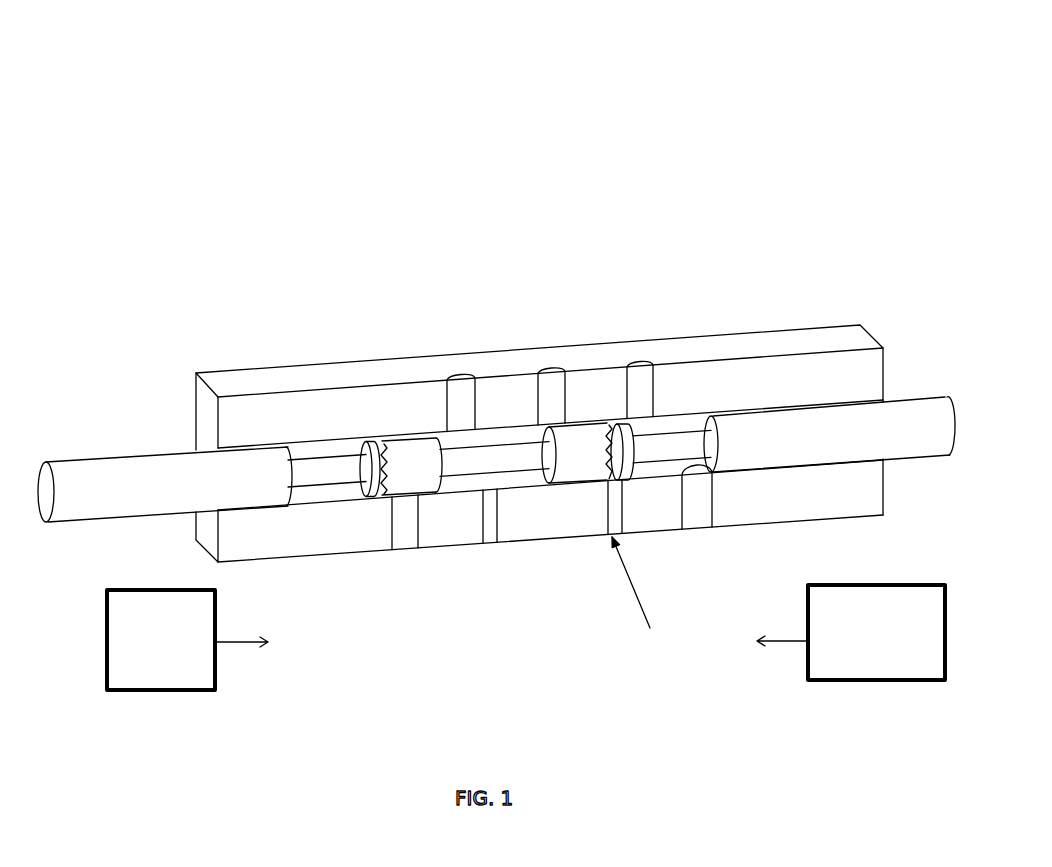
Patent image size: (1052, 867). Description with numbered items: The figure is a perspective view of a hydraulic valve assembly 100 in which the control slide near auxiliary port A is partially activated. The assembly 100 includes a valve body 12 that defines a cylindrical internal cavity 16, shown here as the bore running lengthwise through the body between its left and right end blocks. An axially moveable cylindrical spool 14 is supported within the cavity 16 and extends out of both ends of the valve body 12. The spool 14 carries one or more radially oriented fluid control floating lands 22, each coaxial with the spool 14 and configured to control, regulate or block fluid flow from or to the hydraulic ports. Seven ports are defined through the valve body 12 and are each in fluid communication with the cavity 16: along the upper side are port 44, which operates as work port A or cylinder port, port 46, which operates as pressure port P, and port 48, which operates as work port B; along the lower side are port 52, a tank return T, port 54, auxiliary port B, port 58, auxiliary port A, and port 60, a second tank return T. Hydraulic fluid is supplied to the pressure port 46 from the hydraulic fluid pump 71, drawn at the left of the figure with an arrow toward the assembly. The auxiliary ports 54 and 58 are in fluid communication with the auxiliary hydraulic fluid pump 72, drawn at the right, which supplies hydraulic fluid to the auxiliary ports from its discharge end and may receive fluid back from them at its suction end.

The hydraulic valve assembly 100 is at (496, 349).
The valve body 12 is at (260, 380).
The spool 14 is at (772, 432).
The cylindrical internal cavity 16 is at (480, 438).
The floating land 22 is at (375, 508).
The port 44 is at (460, 398).
The port 46 is at (545, 382).
The port 48 is at (637, 372).
The port 52 is at (402, 525).
The port 54 is at (490, 542).
The port 58 is at (615, 523).
The port 60 is at (695, 510).
The hydraulic fluid pump 71 is at (167, 652).
The auxiliary hydraulic fluid pump 72 is at (892, 640).